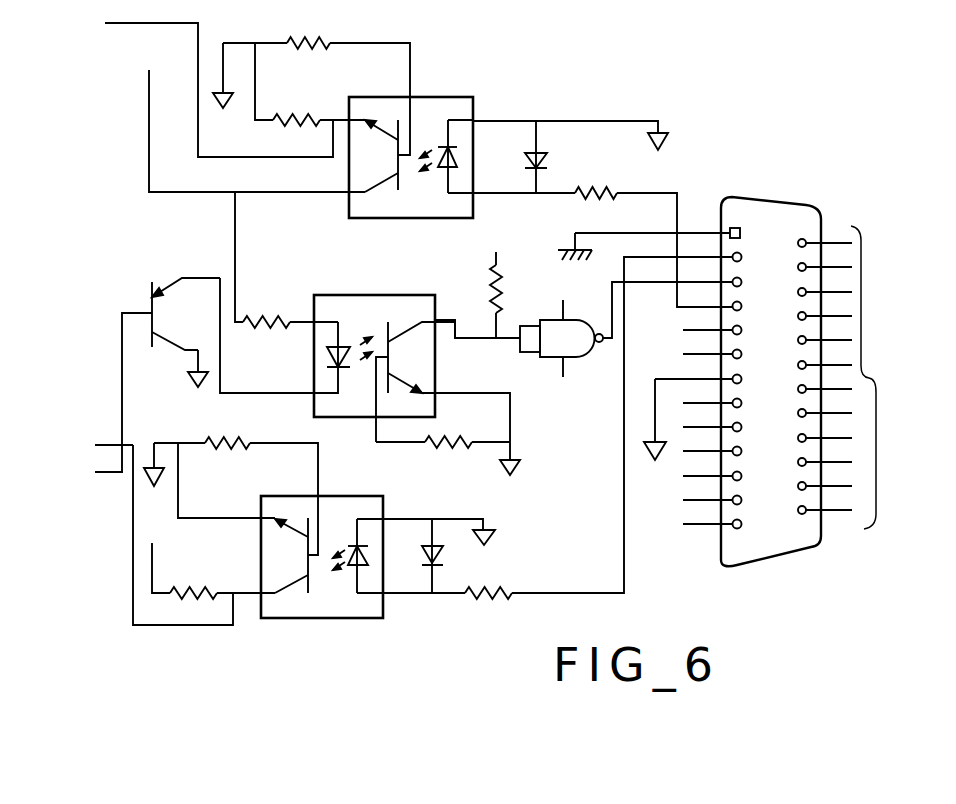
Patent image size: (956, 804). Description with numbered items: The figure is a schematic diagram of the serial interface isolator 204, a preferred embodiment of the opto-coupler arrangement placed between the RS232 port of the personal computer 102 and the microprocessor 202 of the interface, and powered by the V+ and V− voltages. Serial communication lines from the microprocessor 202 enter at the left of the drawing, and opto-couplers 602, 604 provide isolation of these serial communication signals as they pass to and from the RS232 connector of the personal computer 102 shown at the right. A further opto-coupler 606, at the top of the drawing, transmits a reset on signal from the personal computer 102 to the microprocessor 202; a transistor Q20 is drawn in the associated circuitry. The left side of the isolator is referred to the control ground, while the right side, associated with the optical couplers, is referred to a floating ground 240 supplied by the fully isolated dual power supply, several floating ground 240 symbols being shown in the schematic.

The serial interface isolator 204 is at (617, 83).
The opto-coupler 606 is at (438, 97).
The opto-coupler 604 is at (368, 295).
The opto-coupler 602 is at (357, 496).
The transistor Q20 is at (152, 327).
The floating ground 240 is at (672, 136).
The microprocessor 202 is at (83, 474).
The personal computer 102 is at (866, 532).